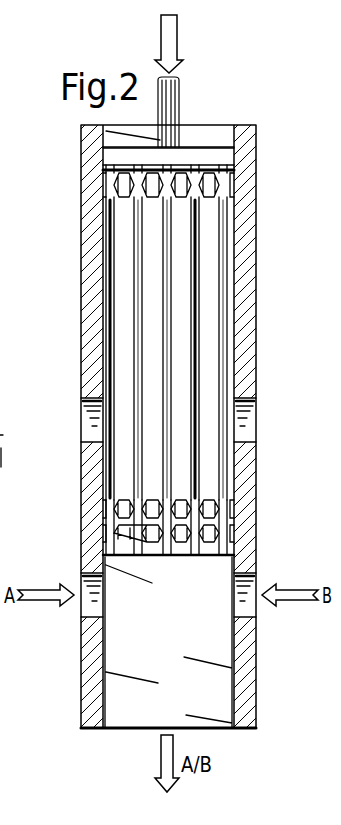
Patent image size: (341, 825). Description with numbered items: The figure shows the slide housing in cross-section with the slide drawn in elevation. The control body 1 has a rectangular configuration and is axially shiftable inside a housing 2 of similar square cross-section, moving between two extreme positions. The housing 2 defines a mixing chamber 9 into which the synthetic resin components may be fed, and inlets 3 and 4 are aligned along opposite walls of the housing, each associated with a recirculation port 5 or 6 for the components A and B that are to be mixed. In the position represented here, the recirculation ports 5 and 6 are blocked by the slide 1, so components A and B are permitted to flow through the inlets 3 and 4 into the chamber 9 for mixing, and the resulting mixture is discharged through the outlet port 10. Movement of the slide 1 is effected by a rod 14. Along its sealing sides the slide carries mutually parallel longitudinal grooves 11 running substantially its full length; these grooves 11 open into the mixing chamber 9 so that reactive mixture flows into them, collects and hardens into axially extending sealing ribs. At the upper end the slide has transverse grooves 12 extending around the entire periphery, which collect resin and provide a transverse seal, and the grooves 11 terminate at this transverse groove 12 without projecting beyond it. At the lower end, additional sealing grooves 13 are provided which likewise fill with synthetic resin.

The control body 1 is at (207, 307).
The housing 2 is at (245, 218).
The inlet 3 is at (90, 607).
The inlet 4 is at (252, 589).
The recirculation port 5 is at (85, 407).
The recirculation port 6 is at (252, 408).
The mixing chamber 9 is at (223, 650).
The outlet port 10 is at (142, 724).
The longitudinal grooves 11 is at (220, 360).
The transverse grooves 12 is at (215, 164).
The sealing grooves 13 is at (108, 197).
The rod 14 is at (173, 105).